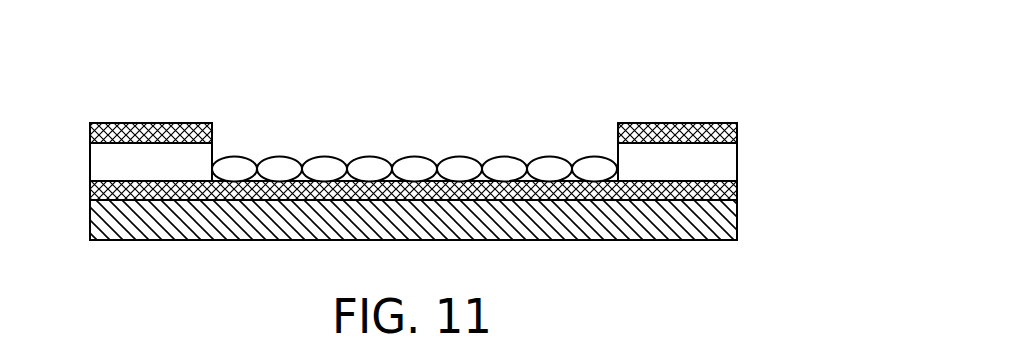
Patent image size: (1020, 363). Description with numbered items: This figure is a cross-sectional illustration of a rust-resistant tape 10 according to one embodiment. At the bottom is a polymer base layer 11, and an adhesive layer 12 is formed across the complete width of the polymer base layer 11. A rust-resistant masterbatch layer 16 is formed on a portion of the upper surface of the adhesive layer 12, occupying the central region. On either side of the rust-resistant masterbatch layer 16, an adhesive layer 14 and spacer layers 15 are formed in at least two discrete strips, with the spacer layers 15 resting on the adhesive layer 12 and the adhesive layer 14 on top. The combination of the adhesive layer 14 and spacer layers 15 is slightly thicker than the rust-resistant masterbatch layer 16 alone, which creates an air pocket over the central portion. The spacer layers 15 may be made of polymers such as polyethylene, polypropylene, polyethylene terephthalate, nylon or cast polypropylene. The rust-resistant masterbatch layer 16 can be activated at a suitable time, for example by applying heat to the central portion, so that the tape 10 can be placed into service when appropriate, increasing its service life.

The tape 10 is at (290, 67).
The polymer base layer 11 is at (662, 240).
The adhesive layer 12 is at (90, 187).
The adhesive layer 14 is at (89, 135).
The spacer layers 15 is at (90, 163).
The rust-resistant masterbatch layer 16 is at (410, 158).